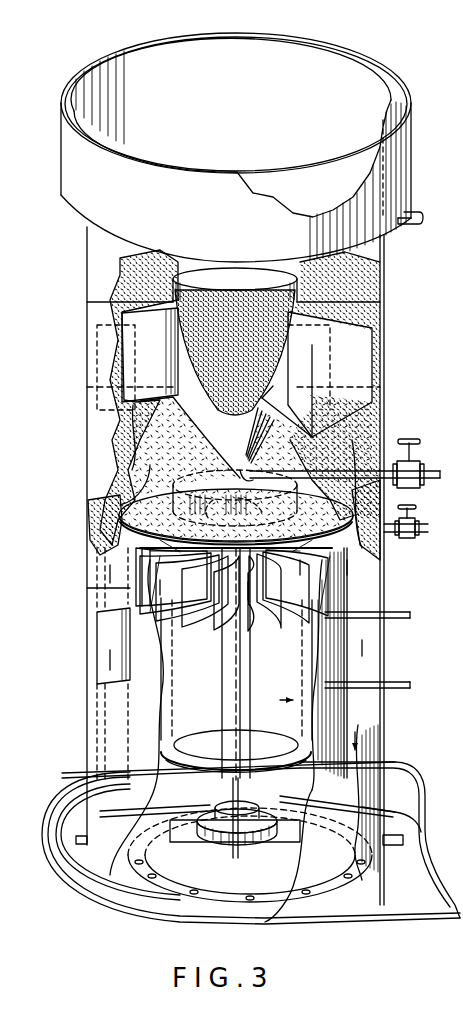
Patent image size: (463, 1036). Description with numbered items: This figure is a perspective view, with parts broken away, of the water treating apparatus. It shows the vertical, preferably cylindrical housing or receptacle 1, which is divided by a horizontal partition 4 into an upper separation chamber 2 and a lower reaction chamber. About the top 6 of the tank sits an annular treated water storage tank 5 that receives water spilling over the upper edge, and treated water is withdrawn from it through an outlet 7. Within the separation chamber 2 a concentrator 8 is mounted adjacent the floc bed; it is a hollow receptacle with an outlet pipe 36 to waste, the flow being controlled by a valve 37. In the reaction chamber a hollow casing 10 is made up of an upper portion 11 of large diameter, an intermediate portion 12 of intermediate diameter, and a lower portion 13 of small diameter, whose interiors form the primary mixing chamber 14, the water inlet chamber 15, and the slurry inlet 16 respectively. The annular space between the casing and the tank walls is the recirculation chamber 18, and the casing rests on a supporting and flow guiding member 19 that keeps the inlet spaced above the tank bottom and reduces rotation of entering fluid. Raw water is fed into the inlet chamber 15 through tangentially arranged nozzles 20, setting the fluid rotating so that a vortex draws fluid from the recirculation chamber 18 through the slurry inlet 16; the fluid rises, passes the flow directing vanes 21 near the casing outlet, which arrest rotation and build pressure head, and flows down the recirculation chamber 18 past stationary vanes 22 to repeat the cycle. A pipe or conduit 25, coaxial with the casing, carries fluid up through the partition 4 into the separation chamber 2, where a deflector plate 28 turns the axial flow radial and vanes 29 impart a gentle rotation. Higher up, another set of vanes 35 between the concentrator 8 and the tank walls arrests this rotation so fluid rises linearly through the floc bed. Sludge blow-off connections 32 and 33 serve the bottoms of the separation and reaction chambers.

The housing or receptacle 1 is at (92, 272).
The separation chamber 2 is at (352, 425).
The horizontal partition 4 is at (122, 520).
The treated water storage tank 5 is at (380, 68).
The top of the tank 6 is at (300, 66).
The outlet 7 is at (412, 220).
The concentrator 8 is at (205, 283).
The hollow casing 10 is at (346, 640).
The upper portion of casing 11 is at (333, 664).
The intermediate portion of casing 12 is at (190, 808).
The lower portion of casing 13 is at (220, 830).
The primary mixing chamber 14 is at (289, 661).
The water inlet chamber 15 is at (276, 759).
The slurry inlet 16 is at (243, 807).
The recirculation chamber 18 is at (373, 717).
The supporting and flow guiding member 19 is at (257, 842).
The tangentially arranged nozzles 20 is at (78, 772).
The flow directing vanes 21 is at (192, 568).
The stationary vanes 22 is at (98, 613).
The pipe or conduit 25 is at (225, 660).
The deflector plate 28 is at (200, 478).
The vanes 29 is at (130, 506).
The sludge blow-off connection 32 is at (418, 527).
The sludge blow-off connection 33 is at (388, 847).
The vanes 35 is at (120, 318).
The outlet pipe 36 is at (350, 470).
The valve 37 is at (422, 462).